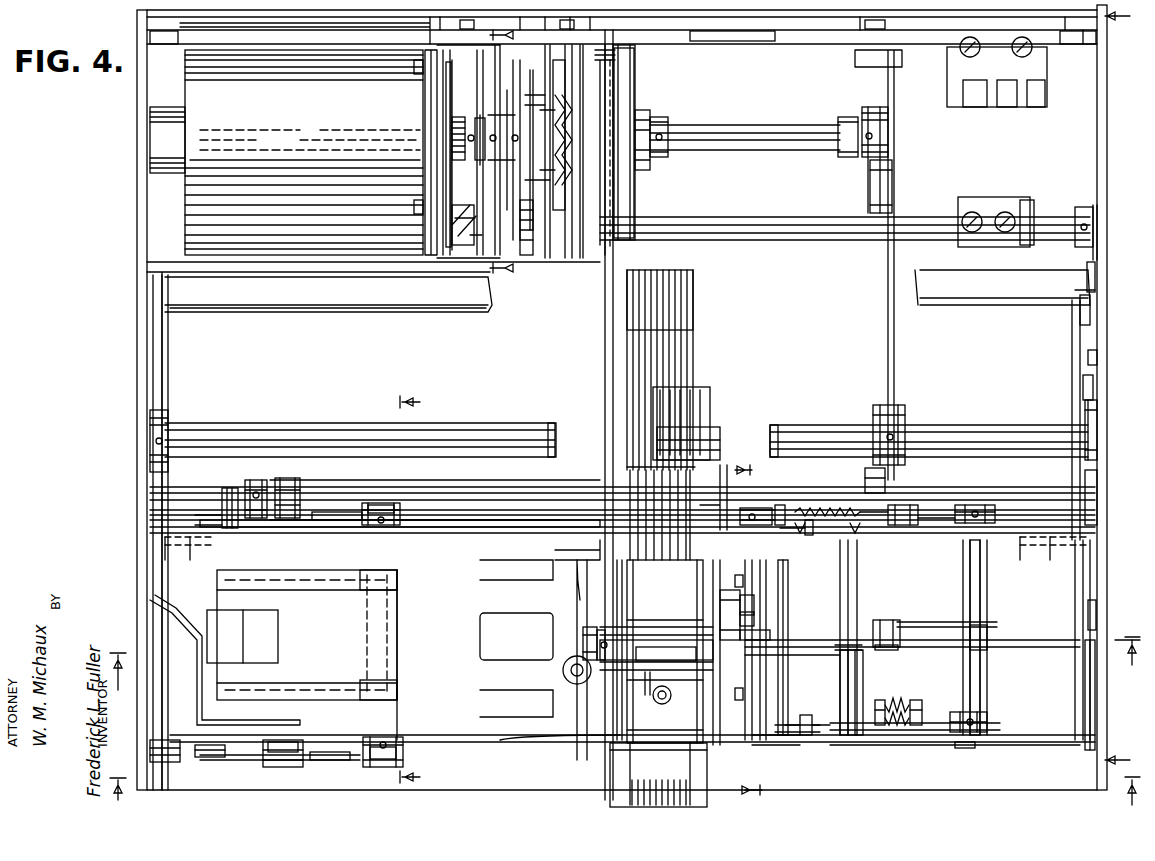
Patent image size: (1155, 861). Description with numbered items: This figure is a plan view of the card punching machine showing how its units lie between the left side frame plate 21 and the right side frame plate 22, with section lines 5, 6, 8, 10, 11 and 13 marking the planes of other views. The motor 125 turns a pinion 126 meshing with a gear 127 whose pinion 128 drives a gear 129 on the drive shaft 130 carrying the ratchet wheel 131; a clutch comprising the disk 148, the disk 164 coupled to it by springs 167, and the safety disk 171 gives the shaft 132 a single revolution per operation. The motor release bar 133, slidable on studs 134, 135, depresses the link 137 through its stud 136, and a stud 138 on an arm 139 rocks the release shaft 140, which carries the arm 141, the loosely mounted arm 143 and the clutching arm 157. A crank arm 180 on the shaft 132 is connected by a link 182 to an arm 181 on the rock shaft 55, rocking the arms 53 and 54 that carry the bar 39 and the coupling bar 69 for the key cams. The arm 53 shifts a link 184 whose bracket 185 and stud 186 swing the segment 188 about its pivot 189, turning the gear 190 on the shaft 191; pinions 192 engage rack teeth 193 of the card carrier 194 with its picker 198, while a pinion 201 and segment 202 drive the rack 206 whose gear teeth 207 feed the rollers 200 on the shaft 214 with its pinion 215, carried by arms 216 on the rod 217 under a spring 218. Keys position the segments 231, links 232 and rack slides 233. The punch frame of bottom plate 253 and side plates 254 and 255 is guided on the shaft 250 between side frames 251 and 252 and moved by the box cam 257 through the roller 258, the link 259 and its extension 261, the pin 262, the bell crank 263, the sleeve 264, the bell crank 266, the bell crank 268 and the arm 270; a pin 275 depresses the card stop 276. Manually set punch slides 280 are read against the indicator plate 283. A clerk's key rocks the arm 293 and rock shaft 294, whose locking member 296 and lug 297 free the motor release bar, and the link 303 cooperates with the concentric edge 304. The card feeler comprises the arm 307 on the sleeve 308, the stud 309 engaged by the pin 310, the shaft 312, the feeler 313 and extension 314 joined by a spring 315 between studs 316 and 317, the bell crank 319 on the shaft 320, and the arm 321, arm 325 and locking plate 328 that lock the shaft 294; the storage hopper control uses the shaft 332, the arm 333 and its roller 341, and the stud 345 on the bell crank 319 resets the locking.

The section line 5- 5 is at (1127, 630).
The section line 6- 6 is at (625, 720).
The section line 8- 8 is at (743, 629).
The section line 10- 10 is at (399, 588).
The section line 11- 11 is at (513, 151).
The section line 13- 13 is at (1097, 396).
The left side frame plate 21 is at (137, 503).
The right side frame plate 22 is at (1107, 190).
The bar 39 is at (200, 548).
The arm 53 is at (180, 360).
The arm 54 is at (1070, 345).
The rock shaft 55 is at (326, 432).
The coupling bar 69 is at (255, 290).
The motor 125 is at (190, 185).
The pinion 126 is at (452, 138).
The gear 127 is at (435, 105).
The pinion 128 is at (498, 172).
The gear 129 is at (468, 240).
The drive shaft 130 is at (478, 135).
The ratchet wheel 131 is at (500, 255).
The shaft 132 is at (768, 130).
The motor release bar 133 is at (1085, 748).
The stud 134 is at (1095, 612).
The stud 135 is at (1088, 428).
The stud 136 is at (1083, 380).
The link 137 is at (1083, 329).
The stud 138 is at (1087, 268).
The arm 139 is at (1095, 250).
The release shaft 140 is at (1048, 225).
The arm 141 is at (578, 258).
The arm 143 is at (565, 258).
The disk 148 is at (615, 70).
The arm 157 is at (500, 185).
The disk 164 is at (570, 110).
The springs 167 is at (640, 168).
The safety disk 171 is at (470, 98).
The crank arm 180 is at (880, 162).
The arm 181 is at (880, 465).
The link 182 is at (888, 350).
The link 184 is at (185, 700).
The bracket 185 is at (190, 750).
The stud 186 is at (210, 758).
The segment 188 is at (327, 762).
The pivot 189 is at (285, 767).
The gear 190 is at (405, 757).
The shaft 191 is at (410, 717).
The pinions 192 is at (405, 578).
The rack teeth 193 is at (325, 575).
The card carrier 194 is at (398, 640).
The picker 198 is at (193, 630).
The rollers 200 is at (745, 578).
The pinion 201 is at (395, 512).
The segment 202 is at (345, 515).
The rack 206 is at (455, 515).
The gear teeth 207 is at (560, 520).
The shaft 214 is at (740, 592).
The pinion 215 is at (735, 505).
The arms 216 is at (770, 585).
The rod 217 is at (788, 672).
The spring 218 is at (808, 535).
The bell-crank shaped segment 231 is at (685, 360).
The link 232 is at (690, 412).
The rack slide 233 is at (690, 315).
The shaft 250 is at (562, 678).
The side frame 251 is at (578, 615).
The side frame 252 is at (688, 620).
The bottom plate 253 is at (650, 580).
The side plate 254 is at (600, 570).
The side plate 255 is at (700, 672).
The box cam 257 is at (635, 195).
The roller 258 is at (625, 80).
The reciprocable link 259 is at (605, 380).
The extension 261 is at (583, 645).
The pin 262 is at (605, 665).
The bell crank 263 is at (627, 620).
The sleeve 264 is at (650, 672).
The bell crank 266 is at (666, 647).
The bell crank 268 is at (613, 740).
The arm 270 is at (715, 740).
The pin 275 is at (755, 606).
The card stop 276 is at (755, 614).
The punch slides 280 is at (660, 796).
The indicator plate 283 is at (630, 765).
The arm 293 is at (290, 500).
The rock shaft 294 is at (508, 492).
The locking member 296 is at (1097, 490).
The lug 297 is at (1097, 358).
The link 303 is at (240, 478).
The concentric edge 304 is at (252, 480).
The arm 307 is at (808, 640).
The sleeve 308 is at (862, 667).
The stud 309 is at (800, 648).
The pin 310 is at (775, 630).
The shaft 312 is at (858, 580).
The feeler 313 is at (780, 733).
The extension 314 is at (930, 730).
The spring 315 is at (898, 705).
The stud 316 is at (880, 700).
The stud 317 is at (920, 712).
The bell crank 319 is at (1015, 700).
The shaft 320 is at (987, 680).
The arm 321 is at (985, 505).
The arm 325 is at (900, 505).
The locking plate 328 is at (848, 486).
The shaft 332 is at (990, 583).
The arm 333 is at (922, 620).
The roller 341 is at (885, 630).
The stud 345 is at (968, 748).